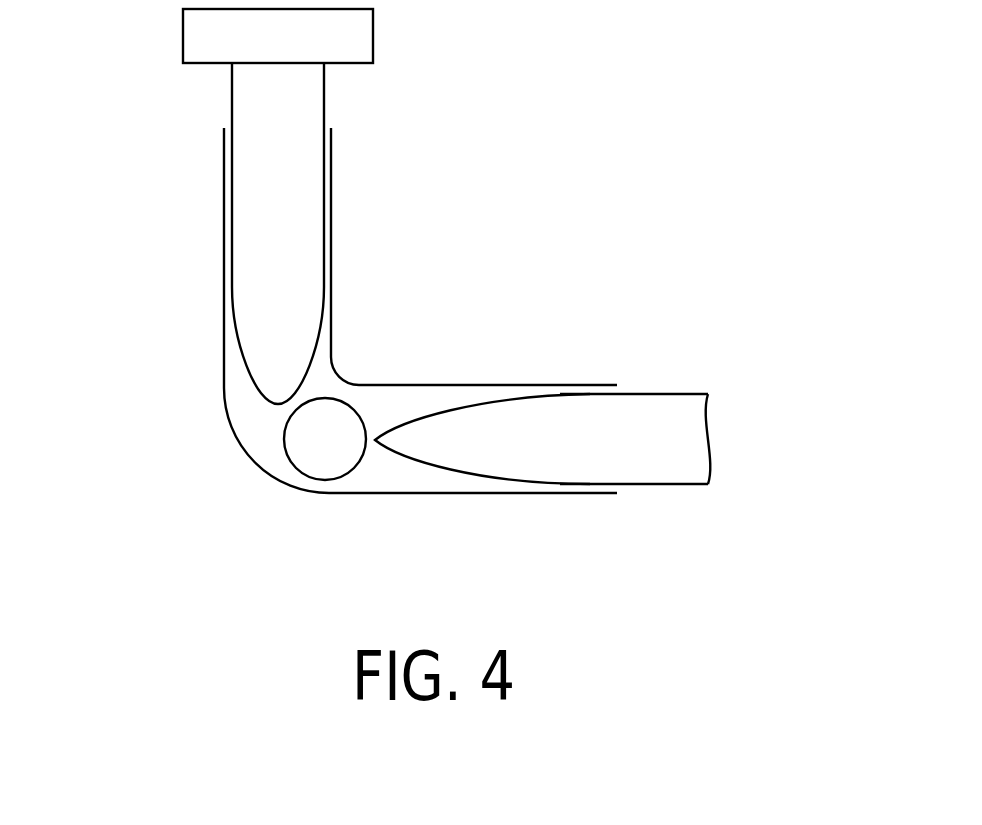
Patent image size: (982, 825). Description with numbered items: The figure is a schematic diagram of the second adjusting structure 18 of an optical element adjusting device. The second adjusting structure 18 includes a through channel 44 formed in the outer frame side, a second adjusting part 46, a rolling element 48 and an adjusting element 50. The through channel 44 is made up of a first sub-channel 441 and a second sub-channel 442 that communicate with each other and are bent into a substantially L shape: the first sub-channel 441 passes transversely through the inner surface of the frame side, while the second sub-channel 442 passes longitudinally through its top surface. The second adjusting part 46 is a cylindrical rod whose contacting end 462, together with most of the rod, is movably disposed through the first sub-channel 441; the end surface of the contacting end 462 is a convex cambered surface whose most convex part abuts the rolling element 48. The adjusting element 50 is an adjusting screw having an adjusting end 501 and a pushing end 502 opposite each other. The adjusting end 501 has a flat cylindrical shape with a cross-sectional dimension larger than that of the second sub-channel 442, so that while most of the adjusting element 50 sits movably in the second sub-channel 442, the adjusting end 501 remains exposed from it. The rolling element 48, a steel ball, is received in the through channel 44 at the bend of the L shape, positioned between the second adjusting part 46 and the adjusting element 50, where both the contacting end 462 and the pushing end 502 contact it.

The second adjusting structure 18 is at (570, 202).
The through channel 44 is at (471, 266).
The first sub-channel 441 is at (397, 405).
The second sub-channel 442 is at (325, 263).
The second adjusting part 46 is at (688, 442).
The contacting end 462 is at (393, 450).
The rolling element 48 is at (320, 443).
The adjusting element 50 is at (300, 95).
The adjusting end 501 is at (345, 31).
The pushing end 502 is at (253, 383).